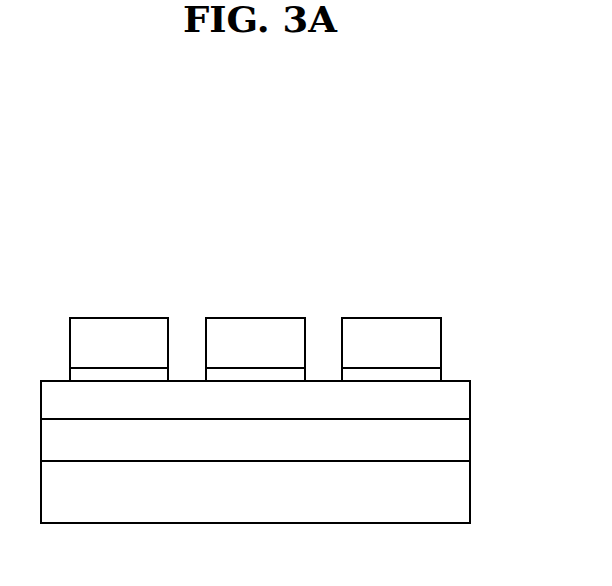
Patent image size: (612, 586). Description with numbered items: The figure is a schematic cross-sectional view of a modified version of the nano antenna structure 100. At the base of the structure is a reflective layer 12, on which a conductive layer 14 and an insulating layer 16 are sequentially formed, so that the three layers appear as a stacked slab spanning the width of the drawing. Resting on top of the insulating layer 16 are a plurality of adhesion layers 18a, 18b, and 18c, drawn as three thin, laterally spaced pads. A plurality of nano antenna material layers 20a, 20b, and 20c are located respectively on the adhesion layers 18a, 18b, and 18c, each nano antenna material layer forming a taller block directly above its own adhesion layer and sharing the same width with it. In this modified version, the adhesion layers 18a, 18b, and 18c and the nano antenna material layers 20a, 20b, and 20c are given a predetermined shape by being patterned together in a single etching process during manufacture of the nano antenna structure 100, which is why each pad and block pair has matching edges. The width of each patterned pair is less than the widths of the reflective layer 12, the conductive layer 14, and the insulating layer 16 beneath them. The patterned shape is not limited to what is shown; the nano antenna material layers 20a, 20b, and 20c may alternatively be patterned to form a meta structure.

The nano antenna structure 100 is at (470, 231).
The reflective layer 12 is at (459, 494).
The conductive layer 14 is at (459, 440).
The insulating layer 16 is at (459, 402).
The adhesion layer 18a is at (147, 375).
The adhesion layer 18b is at (282, 375).
The adhesion layer 18c is at (418, 375).
The nano antenna material layer 20a is at (87, 328).
The nano antenna material layer 20b is at (223, 328).
The nano antenna material layer 20c is at (360, 328).